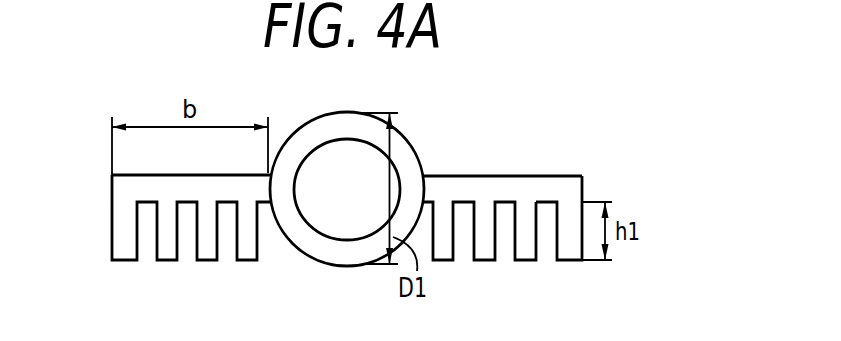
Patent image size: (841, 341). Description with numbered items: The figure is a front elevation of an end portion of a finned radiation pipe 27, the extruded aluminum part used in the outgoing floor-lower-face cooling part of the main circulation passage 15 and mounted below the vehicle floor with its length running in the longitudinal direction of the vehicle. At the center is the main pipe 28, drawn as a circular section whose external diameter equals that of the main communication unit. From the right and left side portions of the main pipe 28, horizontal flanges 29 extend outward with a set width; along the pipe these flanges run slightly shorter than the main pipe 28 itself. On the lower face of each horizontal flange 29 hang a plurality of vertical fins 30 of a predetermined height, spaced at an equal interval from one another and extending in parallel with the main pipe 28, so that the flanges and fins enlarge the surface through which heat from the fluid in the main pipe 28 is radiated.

The main circulation passage 15 is at (329, 219).
The finned radiation pipe 27 is at (585, 165).
The main pipe 28 is at (408, 160).
The horizontal flange 29 is at (247, 180).
The vertical fin 30 is at (565, 253).